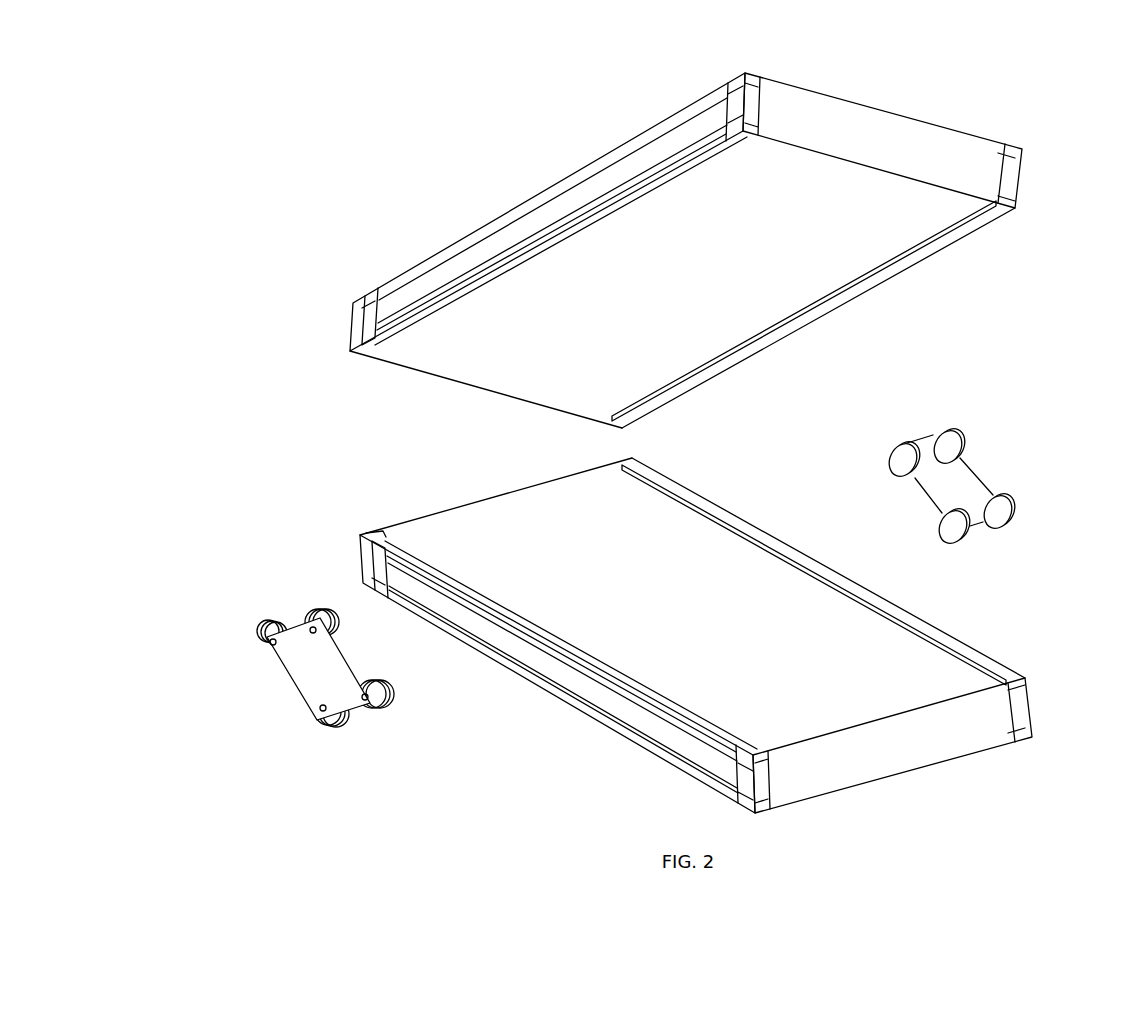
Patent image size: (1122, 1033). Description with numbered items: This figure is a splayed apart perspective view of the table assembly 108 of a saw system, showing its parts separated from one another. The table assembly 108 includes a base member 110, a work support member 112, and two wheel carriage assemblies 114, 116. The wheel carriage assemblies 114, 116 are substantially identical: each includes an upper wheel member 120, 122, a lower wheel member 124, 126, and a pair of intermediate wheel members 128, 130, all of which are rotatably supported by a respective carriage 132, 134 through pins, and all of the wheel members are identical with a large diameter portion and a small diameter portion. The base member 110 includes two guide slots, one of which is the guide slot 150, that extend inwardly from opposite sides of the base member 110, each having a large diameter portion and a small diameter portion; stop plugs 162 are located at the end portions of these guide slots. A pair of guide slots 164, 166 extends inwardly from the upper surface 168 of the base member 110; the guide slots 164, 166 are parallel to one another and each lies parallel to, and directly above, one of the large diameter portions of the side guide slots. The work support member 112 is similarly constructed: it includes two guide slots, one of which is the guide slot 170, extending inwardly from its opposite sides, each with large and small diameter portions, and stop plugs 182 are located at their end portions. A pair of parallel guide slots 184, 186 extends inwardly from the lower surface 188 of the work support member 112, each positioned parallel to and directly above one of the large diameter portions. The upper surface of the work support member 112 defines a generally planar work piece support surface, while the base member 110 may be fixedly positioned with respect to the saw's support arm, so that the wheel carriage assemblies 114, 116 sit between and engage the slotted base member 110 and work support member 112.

The table assembly 108 is at (313, 193).
The base member 110 is at (925, 767).
The work support member 112 is at (945, 132).
The wheel carriage assembly 114 is at (228, 727).
The wheel carriage assembly 116 is at (1073, 447).
The upper wheel member 120 is at (318, 612).
The upper wheel member 122 is at (940, 437).
The lower wheel member 124 is at (335, 726).
The lower wheel member 126 is at (965, 542).
The intermediate wheel members 128 is at (270, 625).
The intermediate wheel members 130 is at (890, 455).
The carriage 132 is at (290, 680).
The carriage 134 is at (980, 463).
The guide slot 150 is at (622, 728).
The stop plugs 162 is at (358, 558).
The guide slot 164 is at (380, 528).
The guide slot 166 is at (693, 493).
The upper surface 168 is at (435, 518).
The guide slot 170 is at (647, 152).
The stop plugs 182 is at (767, 100).
The guide slot 184 is at (405, 338).
The guide slot 186 is at (867, 283).
The lower surface 188 is at (478, 375).